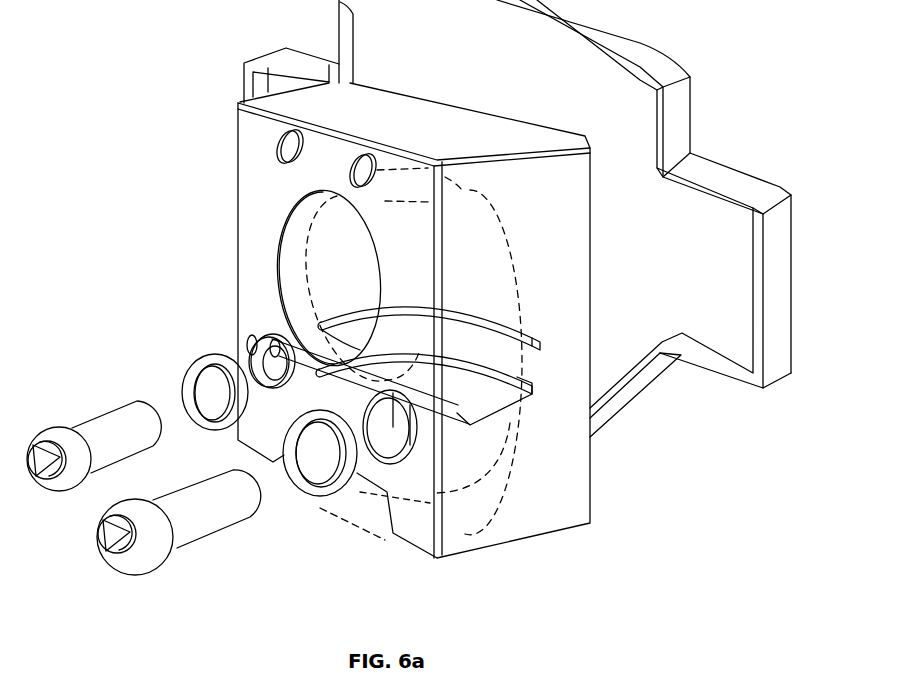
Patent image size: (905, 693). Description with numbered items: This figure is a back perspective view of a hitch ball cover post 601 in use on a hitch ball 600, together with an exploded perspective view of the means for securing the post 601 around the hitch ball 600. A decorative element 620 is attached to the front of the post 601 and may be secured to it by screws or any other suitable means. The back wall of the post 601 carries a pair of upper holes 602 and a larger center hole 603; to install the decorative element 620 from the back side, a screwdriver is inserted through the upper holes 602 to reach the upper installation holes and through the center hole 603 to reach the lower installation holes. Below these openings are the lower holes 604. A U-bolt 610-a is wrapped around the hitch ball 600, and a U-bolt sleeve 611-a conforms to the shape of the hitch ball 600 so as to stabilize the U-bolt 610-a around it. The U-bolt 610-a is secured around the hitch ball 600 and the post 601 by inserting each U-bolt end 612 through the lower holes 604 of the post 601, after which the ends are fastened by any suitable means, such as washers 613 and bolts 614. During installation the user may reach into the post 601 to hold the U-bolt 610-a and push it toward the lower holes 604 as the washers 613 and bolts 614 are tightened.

The hitch ball 600 is at (323, 260).
The hitch ball cover post 601 is at (258, 180).
The upper holes 602 is at (356, 170).
The center hole 603 is at (280, 220).
The lower holes 604 is at (248, 343).
The U-bolt 610-a is at (533, 338).
The U-bolt sleeve 611-a is at (580, 353).
The U-bolt end 612 is at (242, 360).
The washers 613 is at (173, 380).
The bolts 614 is at (65, 495).
The decorative element 620 is at (697, 95).